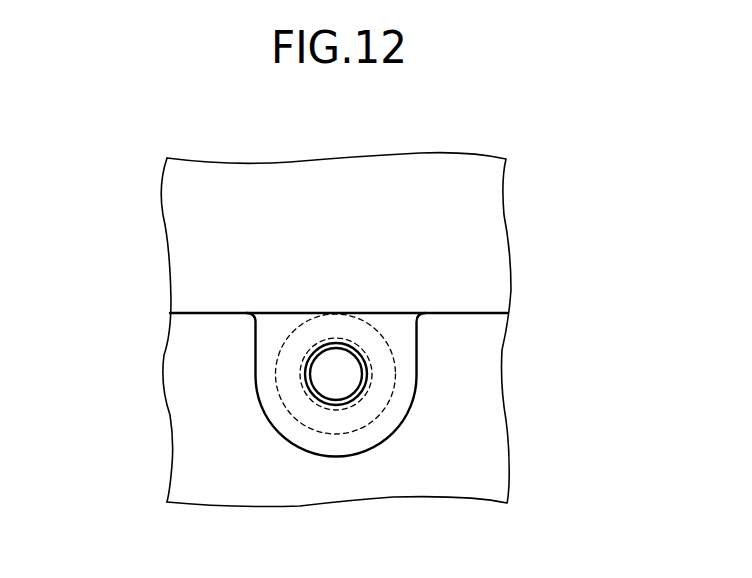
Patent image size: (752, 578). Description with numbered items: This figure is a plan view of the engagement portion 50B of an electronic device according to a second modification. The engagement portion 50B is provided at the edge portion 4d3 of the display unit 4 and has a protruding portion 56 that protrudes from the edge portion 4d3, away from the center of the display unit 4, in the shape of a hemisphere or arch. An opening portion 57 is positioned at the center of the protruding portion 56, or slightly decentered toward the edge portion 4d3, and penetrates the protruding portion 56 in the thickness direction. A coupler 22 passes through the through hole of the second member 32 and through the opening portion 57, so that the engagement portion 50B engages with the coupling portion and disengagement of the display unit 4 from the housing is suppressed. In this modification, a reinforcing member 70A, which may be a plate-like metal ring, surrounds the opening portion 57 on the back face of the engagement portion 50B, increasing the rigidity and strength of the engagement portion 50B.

The display unit 4 is at (465, 155).
The edge portion 4d3 is at (472, 313).
The reinforcing member 70A is at (393, 347).
The coupler 22 is at (338, 382).
The second member 32 is at (172, 459).
The opening portion 57 is at (308, 368).
The protruding portion 56 is at (340, 442).
The engagement portion 50B is at (403, 426).